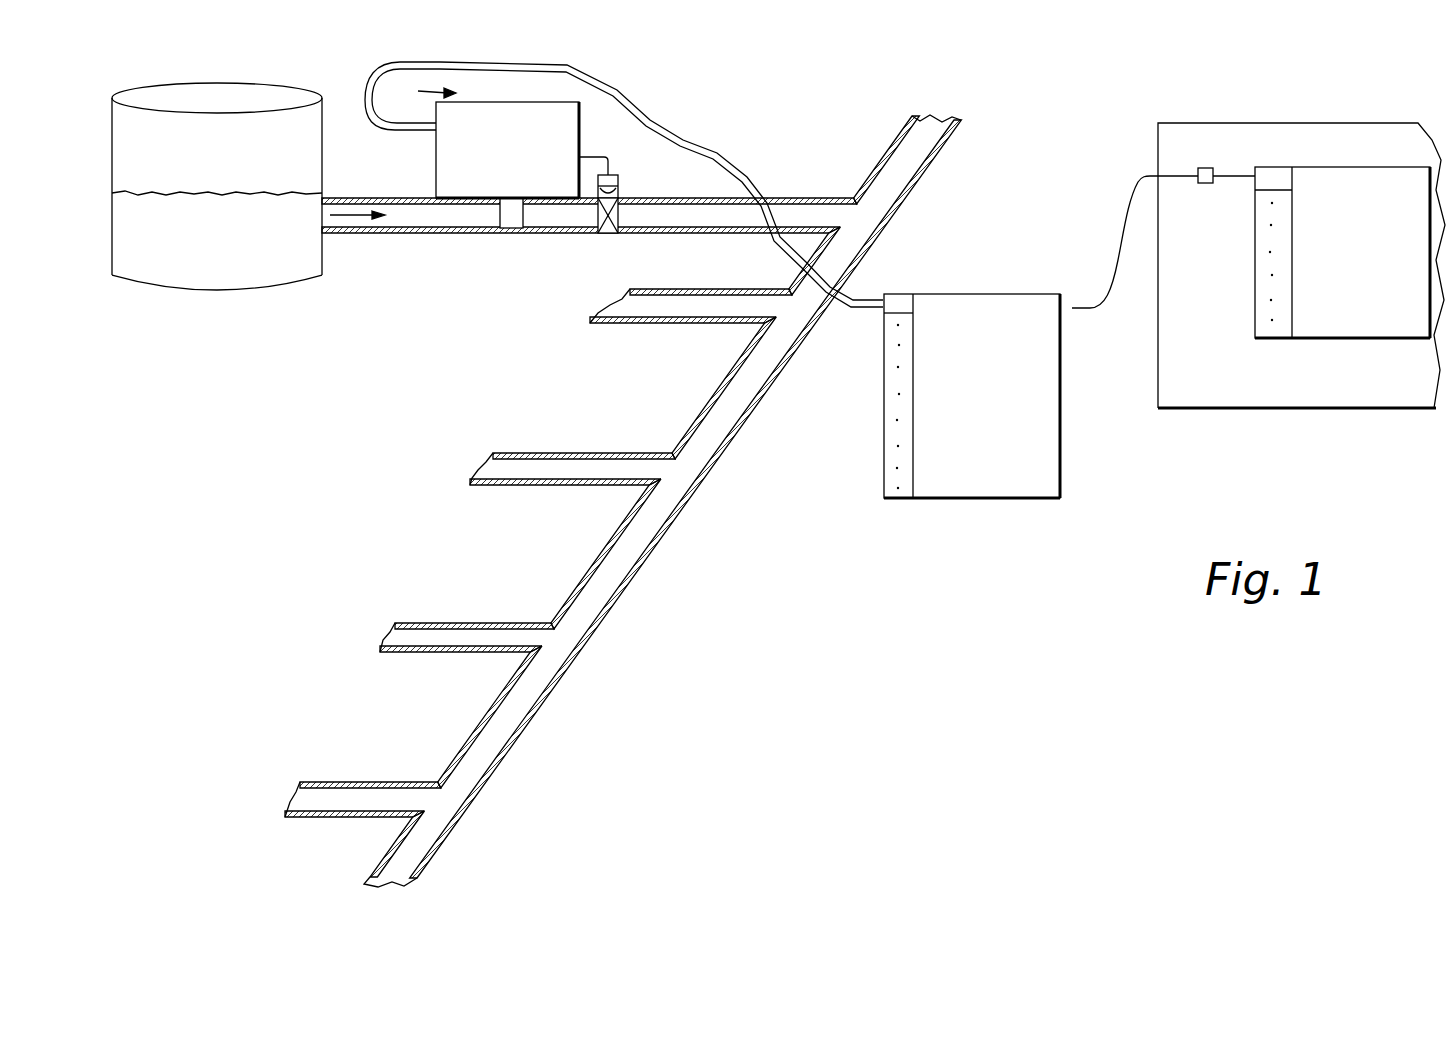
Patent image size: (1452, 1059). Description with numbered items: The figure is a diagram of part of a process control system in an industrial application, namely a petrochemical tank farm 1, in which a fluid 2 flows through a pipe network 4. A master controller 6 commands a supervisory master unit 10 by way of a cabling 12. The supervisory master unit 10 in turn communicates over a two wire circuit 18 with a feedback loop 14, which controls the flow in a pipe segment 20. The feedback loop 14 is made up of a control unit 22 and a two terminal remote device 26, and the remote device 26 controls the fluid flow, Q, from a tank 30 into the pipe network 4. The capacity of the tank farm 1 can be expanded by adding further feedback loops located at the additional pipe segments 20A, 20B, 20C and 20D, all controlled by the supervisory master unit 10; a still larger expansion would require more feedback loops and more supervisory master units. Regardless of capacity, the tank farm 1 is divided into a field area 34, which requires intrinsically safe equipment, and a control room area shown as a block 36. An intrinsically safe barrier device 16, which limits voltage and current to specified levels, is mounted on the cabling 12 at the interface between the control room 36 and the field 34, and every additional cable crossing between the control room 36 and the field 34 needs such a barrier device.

The petrochemical tank farm 1 is at (307, 462).
The fluid 2 is at (684, 501).
The pipe network 4 is at (923, 165).
The master controller 6 is at (1366, 286).
The supervisory master unit 10 is at (990, 429).
The cabling 12 is at (1157, 242).
The feedback loop 14 is at (419, 92).
The intrinsically safe barrier device 16 is at (1210, 168).
The two wire circuit 18 is at (624, 184).
The pipe segment 20 is at (580, 235).
The pipe segment 20A is at (662, 325).
The pipe segment 20B is at (556, 488).
The pipe segment 20C is at (465, 655).
The pipe segment 20D is at (347, 820).
The control unit 22 is at (546, 196).
The two terminal remote device 26 is at (620, 180).
The tank 30 is at (240, 255).
The field area 34 is at (1120, 417).
The control room area 36 is at (1272, 397).